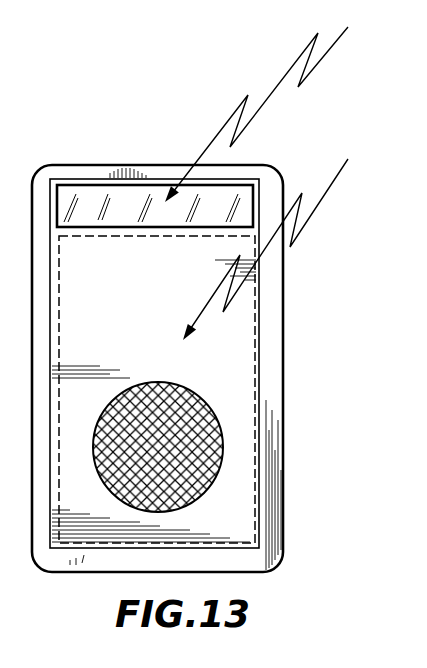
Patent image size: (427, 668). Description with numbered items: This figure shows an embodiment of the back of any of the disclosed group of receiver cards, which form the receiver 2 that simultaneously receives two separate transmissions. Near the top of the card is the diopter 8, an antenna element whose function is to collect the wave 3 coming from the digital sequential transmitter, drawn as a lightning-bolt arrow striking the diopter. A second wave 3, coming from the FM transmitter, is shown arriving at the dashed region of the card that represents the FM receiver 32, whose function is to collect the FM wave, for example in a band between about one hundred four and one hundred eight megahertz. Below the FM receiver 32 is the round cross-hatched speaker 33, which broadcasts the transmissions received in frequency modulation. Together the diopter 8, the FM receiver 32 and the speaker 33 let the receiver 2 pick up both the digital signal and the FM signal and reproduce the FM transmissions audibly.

The receiver 2 is at (48, 577).
The diopter 8 is at (128, 198).
The wave 3 is at (285, 75).
The FM receiver 32 is at (230, 325).
The speaker 33 is at (220, 422).